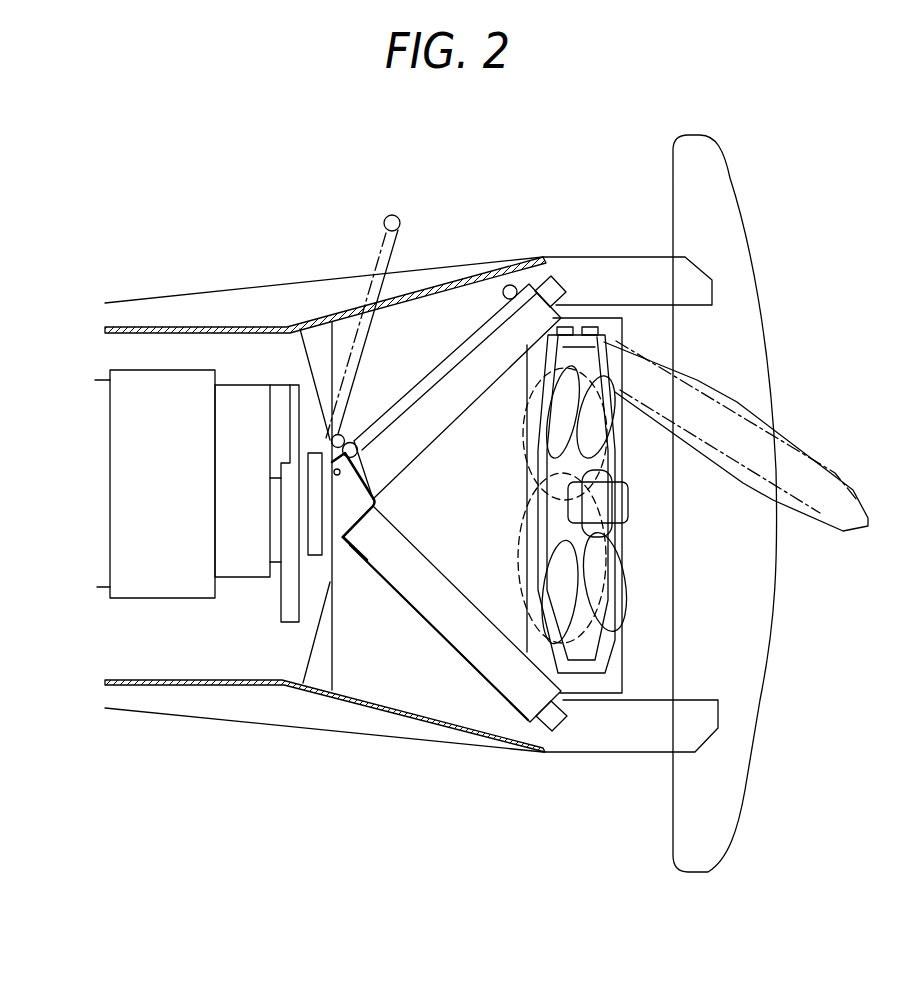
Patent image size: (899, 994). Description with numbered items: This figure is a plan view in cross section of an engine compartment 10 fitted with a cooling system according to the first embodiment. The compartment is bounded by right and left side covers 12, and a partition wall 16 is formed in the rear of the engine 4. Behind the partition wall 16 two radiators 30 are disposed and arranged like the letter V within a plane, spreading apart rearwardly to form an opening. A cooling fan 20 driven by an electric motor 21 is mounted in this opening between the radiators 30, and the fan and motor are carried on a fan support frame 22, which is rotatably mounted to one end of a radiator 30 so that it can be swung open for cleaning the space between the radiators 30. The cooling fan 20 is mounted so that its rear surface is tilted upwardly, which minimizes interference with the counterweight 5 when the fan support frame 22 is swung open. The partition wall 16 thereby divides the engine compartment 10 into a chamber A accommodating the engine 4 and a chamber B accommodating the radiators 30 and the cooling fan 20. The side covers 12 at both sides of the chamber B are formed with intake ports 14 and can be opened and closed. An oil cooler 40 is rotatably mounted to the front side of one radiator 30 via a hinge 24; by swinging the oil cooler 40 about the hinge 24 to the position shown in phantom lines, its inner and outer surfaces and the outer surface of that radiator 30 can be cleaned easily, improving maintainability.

The engine 4 is at (150, 600).
The counterweight 5 is at (753, 764).
The engine compartment 10 is at (138, 310).
The side cover 12 is at (500, 268).
The intake port 14 is at (358, 308).
The partition wall 16 is at (310, 637).
The cooling fan 20 is at (569, 583).
The electric motor 21 is at (618, 503).
The fan support frame 22 is at (603, 661).
The hinge 24 is at (305, 496).
The radiator 30 is at (488, 355).
The oil cooler 40 is at (445, 357).
The chamber A is at (238, 357).
The chamber B is at (386, 664).